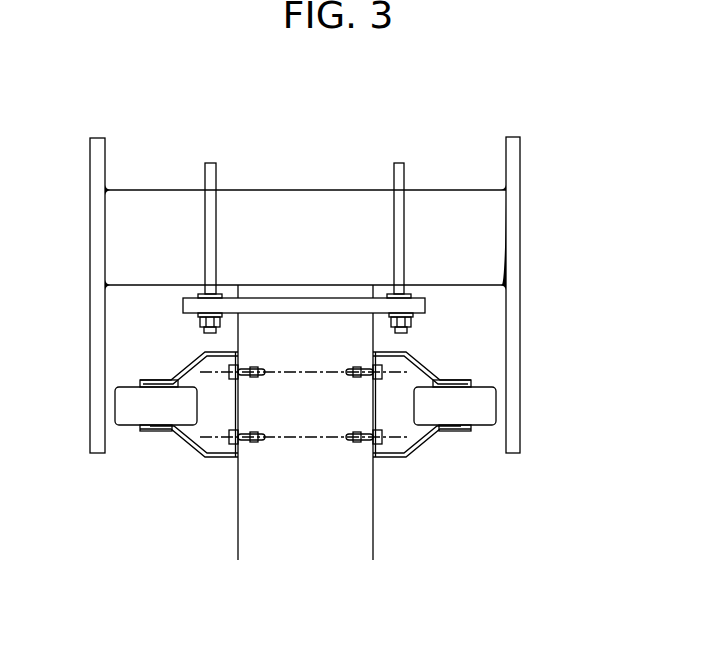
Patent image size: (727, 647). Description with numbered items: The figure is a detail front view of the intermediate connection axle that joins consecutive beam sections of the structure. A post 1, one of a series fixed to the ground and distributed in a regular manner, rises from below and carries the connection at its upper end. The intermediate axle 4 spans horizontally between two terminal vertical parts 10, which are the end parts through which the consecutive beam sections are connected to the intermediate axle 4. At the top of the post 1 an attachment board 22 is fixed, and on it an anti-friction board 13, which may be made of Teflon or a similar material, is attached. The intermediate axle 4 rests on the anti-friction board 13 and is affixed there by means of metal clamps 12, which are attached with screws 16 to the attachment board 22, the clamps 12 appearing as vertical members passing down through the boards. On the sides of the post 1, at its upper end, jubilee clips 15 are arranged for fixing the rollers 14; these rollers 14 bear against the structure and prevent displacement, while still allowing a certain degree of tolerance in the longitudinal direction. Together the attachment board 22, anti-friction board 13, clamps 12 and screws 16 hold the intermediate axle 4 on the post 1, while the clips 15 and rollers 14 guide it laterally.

The post 1 is at (263, 507).
The intermediate axle 4 is at (308, 215).
The terminal vertical part 10 is at (95, 162).
The metal clamp 12 is at (208, 220).
The anti-friction board 13 is at (323, 290).
The roller 14 is at (460, 412).
The jubilee clip 15 is at (410, 455).
The screw 16 is at (287, 454).
The attachment board 22 is at (412, 305).